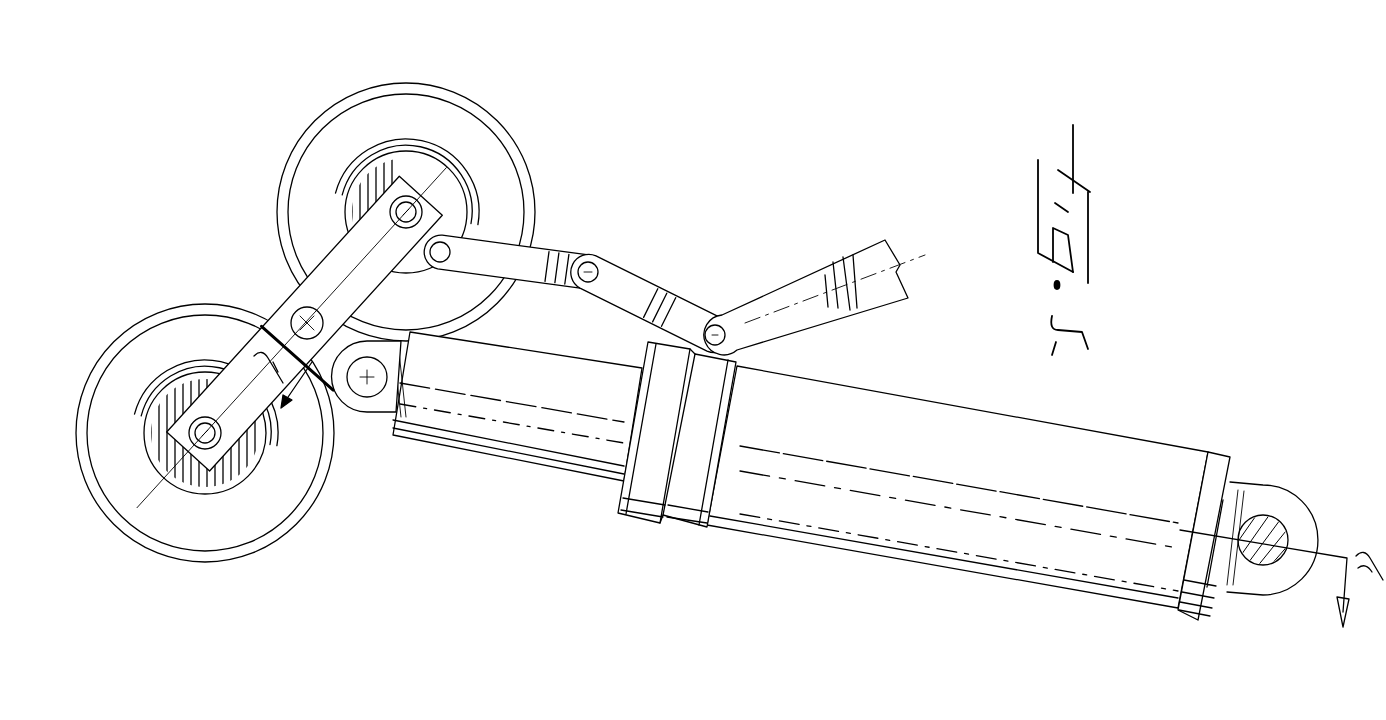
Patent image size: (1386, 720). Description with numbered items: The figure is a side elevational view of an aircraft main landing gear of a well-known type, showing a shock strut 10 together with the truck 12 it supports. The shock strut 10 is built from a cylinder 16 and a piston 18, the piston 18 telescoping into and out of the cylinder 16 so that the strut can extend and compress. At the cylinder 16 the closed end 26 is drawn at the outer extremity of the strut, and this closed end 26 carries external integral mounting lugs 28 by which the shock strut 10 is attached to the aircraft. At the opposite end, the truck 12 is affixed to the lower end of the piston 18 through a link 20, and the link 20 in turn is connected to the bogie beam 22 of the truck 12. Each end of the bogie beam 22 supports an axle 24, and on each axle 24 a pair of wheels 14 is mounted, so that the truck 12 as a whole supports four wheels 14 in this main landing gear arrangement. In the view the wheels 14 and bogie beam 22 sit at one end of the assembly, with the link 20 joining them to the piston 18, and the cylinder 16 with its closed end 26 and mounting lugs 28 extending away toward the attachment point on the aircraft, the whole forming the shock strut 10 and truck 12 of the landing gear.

The shock strut 10 is at (729, 369).
The truck 12 is at (243, 237).
The wheels 14 is at (305, 336).
The cylinder 16 is at (638, 498).
The piston 18 is at (547, 437).
The link 20 is at (372, 339).
The bogie beam 22 is at (207, 322).
The axle 24 is at (396, 202).
The closed end 26 is at (367, 417).
The external integral mounting lugs 28 is at (1280, 593).